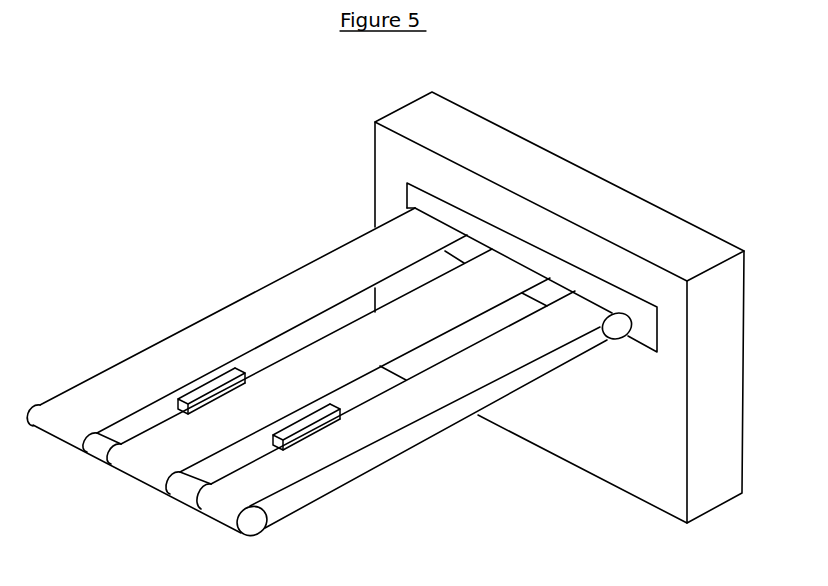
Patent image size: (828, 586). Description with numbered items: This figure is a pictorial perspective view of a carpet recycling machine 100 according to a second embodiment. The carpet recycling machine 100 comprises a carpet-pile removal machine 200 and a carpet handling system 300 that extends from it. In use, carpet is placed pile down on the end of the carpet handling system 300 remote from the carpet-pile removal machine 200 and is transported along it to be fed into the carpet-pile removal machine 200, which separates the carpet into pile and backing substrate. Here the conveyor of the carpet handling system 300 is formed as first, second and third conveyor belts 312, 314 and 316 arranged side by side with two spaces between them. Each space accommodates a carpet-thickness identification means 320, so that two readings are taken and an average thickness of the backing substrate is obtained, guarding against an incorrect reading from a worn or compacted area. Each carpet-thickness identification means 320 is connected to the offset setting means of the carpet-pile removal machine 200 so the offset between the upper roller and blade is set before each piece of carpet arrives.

The carpet recycling machine 100 is at (250, 150).
The carpet-pile removal machine 200 is at (590, 184).
The carpet handling system 300 is at (236, 276).
The first conveyor belt 312 is at (352, 289).
The second conveyor belt 314 is at (449, 322).
The third conveyor belt 316 is at (552, 348).
The carpet-thickness identification means 320 is at (276, 443).